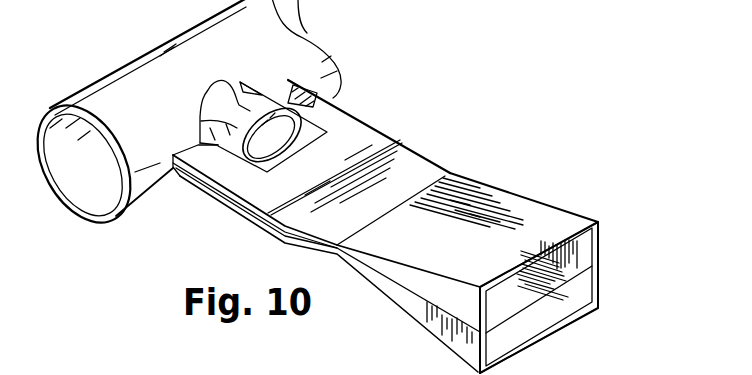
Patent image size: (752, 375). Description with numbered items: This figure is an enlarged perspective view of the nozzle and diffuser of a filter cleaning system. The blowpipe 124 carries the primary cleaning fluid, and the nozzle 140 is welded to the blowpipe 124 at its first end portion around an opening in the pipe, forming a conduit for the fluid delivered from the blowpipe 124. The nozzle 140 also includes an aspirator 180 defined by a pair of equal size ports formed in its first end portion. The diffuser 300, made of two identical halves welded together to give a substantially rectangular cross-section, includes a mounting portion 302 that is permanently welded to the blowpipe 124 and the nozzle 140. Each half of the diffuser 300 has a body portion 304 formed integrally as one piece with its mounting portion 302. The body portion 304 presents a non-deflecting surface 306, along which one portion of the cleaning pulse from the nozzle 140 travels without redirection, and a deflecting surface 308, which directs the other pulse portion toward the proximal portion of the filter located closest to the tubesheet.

The blowpipe 124 is at (217, 43).
The nozzle 140 is at (200, 119).
The aspirator 180 is at (208, 90).
The diffuser 300 is at (415, 226).
The mounting portion 302 is at (250, 200).
The body portion 304 is at (525, 225).
The non-deflecting surface 306 is at (452, 333).
The deflecting surface 308 is at (468, 228).